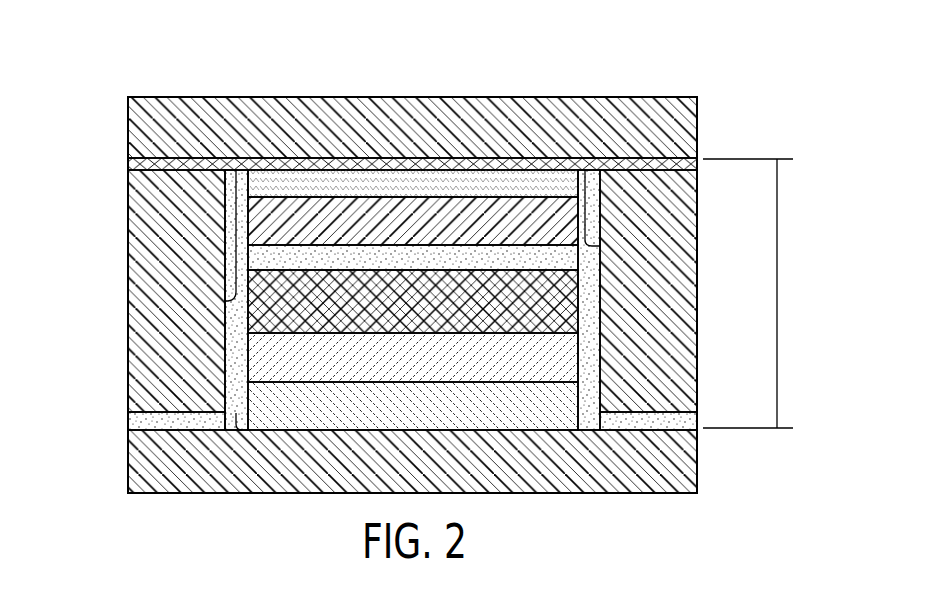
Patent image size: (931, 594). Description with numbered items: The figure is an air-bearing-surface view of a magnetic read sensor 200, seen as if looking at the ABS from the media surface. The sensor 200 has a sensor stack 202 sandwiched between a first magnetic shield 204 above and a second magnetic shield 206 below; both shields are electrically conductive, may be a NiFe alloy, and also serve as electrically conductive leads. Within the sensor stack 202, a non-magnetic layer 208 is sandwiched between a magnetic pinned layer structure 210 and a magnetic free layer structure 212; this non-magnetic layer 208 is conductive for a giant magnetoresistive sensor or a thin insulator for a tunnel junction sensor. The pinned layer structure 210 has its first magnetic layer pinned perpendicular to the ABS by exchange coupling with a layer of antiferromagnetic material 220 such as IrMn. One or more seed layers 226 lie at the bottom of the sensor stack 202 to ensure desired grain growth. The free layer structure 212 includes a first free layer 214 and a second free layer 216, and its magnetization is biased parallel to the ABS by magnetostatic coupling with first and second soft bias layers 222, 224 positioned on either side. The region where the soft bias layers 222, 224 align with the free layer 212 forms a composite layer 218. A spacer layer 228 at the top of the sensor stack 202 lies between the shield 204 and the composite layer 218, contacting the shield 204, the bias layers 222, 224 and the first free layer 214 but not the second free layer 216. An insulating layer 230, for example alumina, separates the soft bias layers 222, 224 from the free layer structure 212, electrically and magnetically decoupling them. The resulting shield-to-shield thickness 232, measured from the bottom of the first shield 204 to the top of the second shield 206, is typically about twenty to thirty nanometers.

The magnetic sensor 200 is at (90, 74).
The sensor stack 202 is at (233, 298).
The first magnetic shield 204 is at (681, 135).
The second magnetic shield 206 is at (142, 465).
The non-magnetic layer 208 is at (563, 258).
The magnetic pinned layer structure 210 is at (563, 286).
The magnetic free layer structure 212 is at (585, 210).
The first free layer 214 is at (442, 185).
The second free layer 216 is at (381, 223).
The composite layer 218 is at (123, 172).
The layer of antiferromagnetic material 220 is at (563, 362).
The first soft bias layer 222 is at (678, 207).
The second soft bias layer 224 is at (142, 296).
The seed layer 226 is at (563, 404).
The spacer layer 228 is at (128, 163).
The insulating layer 230 is at (590, 325).
The shield-to-shield thickness 232 is at (778, 300).